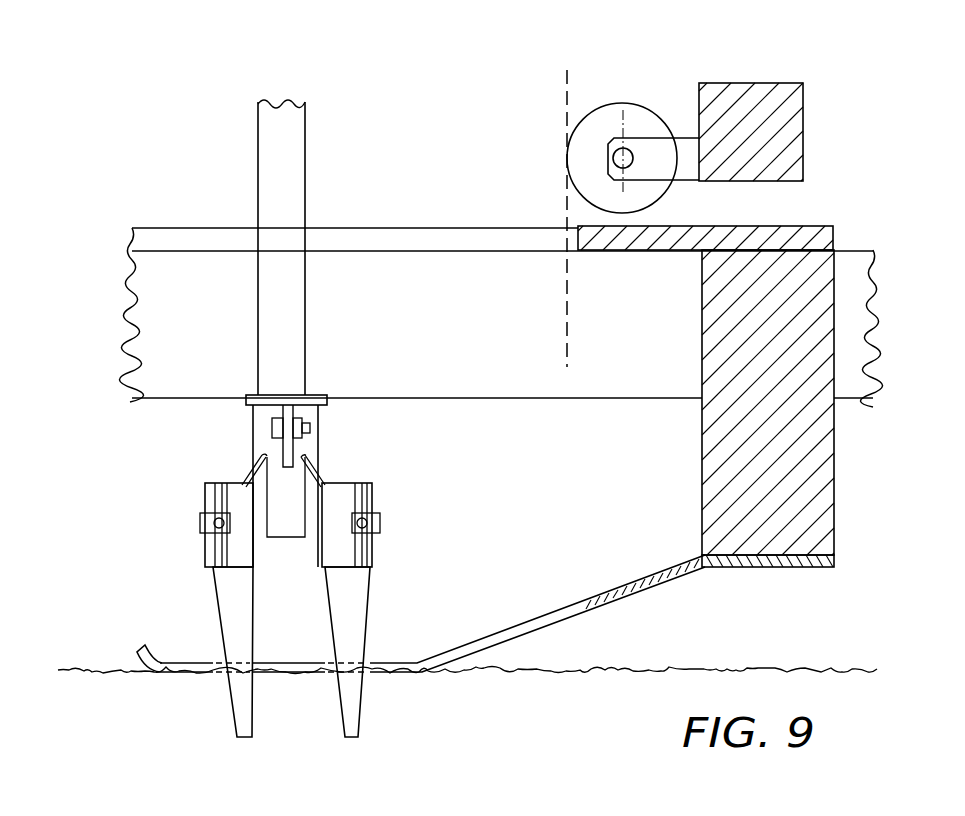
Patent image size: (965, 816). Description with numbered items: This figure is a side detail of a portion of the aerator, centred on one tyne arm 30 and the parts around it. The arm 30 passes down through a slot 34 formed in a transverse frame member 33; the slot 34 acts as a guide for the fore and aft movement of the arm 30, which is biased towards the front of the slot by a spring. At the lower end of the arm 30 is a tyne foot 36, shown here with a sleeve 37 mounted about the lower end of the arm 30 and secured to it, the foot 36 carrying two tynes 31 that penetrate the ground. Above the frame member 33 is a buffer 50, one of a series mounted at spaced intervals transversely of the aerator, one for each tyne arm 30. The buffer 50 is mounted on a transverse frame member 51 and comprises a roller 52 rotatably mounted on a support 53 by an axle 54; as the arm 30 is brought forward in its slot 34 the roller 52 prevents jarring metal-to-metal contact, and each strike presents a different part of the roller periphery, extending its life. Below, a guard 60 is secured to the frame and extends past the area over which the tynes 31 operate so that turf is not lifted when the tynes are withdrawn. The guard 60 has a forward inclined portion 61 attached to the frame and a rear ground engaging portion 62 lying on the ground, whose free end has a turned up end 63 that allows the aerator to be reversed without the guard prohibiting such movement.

The tyne arm 30 is at (290, 165).
The tyne 31 is at (232, 701).
The transverse frame member 33 is at (680, 227).
The slot 34 is at (333, 242).
The tyne foot 36 is at (196, 460).
The sleeve 37 is at (320, 445).
The buffer 50 is at (820, 131).
The transverse frame member 51 is at (805, 167).
The roller 52 is at (584, 125).
The support 53 is at (677, 173).
The axle 54 is at (608, 158).
The guard 60 is at (545, 598).
The forward inclined portion 61 is at (640, 578).
The rear ground engaging portion 62 is at (413, 660).
The turned up end 63 is at (150, 651).